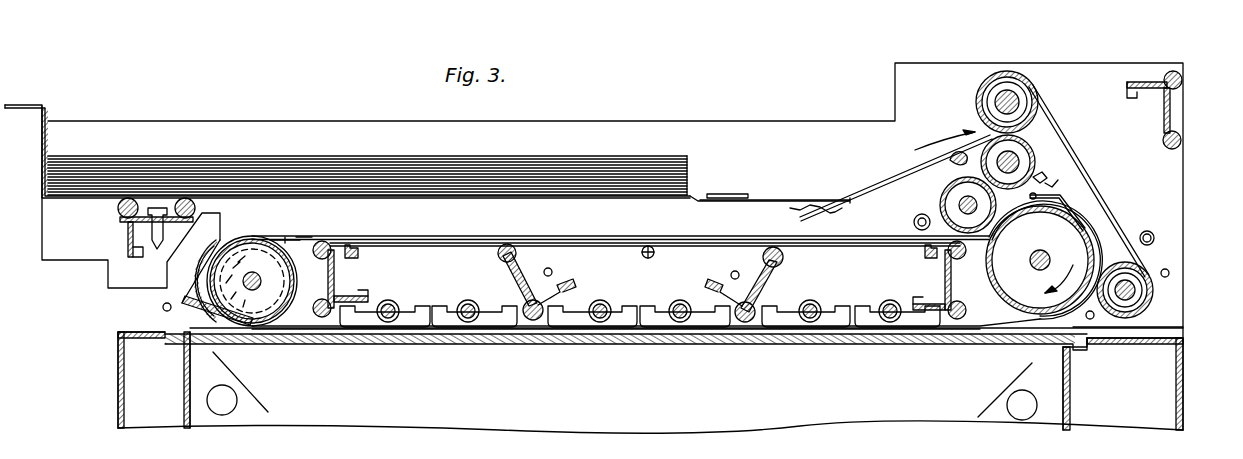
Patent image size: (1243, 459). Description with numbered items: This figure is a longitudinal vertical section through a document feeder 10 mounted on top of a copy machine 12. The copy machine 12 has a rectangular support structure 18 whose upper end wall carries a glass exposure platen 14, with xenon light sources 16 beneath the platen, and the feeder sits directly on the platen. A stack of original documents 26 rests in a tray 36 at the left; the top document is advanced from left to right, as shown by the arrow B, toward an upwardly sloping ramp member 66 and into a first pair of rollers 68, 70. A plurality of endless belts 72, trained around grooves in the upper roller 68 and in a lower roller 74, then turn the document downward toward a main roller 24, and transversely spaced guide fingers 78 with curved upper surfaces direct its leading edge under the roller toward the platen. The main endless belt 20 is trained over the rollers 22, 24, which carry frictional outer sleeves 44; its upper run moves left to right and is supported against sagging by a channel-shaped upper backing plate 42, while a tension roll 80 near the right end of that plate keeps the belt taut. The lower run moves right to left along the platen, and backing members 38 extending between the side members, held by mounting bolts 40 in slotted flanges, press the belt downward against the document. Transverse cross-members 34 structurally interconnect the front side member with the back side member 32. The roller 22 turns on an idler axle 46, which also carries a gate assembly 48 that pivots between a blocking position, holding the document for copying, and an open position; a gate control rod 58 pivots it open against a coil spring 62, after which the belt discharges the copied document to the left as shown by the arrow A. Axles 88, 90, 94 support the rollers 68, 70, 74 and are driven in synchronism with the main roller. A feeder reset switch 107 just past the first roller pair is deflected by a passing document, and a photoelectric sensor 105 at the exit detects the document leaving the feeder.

The document feeder 10 is at (630, 118).
The copy machine 12 is at (117, 402).
The exposure platen 14 is at (365, 345).
The xenon light sources 16 is at (1020, 412).
The rectangular support structure 18 is at (1183, 392).
The endless belt 20 is at (426, 237).
The belt roller 22 is at (277, 300).
The main roller 24 is at (1070, 243).
The original document 26 is at (240, 157).
The back side member 32 is at (803, 128).
The transverse cross-members 34 is at (128, 224).
The tray 36 is at (50, 128).
The backing members 38 is at (418, 314).
The mounting bolts 40 is at (392, 320).
The upper backing plate 42 is at (573, 247).
The outer sleeves 44 is at (213, 277).
The idler axle 46 is at (243, 276).
The gate assembly 48 is at (182, 277).
The gate control rod 58 is at (302, 232).
The coil spring 62 is at (265, 238).
The ramp member 66 is at (890, 180).
The upper roller 68 is at (1022, 88).
The lower roller of first pair 70 is at (1020, 150).
The endless belts 72 is at (1093, 182).
The lower roller 74 is at (1152, 290).
The guide fingers 78 is at (1092, 322).
The tension roll 80 is at (938, 205).
The axle 88 is at (1006, 100).
The axle 90 is at (990, 163).
The axle 94 is at (1132, 294).
The photoelectric sensor 105 is at (165, 311).
The feeder reset switch 107 is at (1042, 176).
The arrow A is at (138, 322).
The arrow B is at (742, 160).